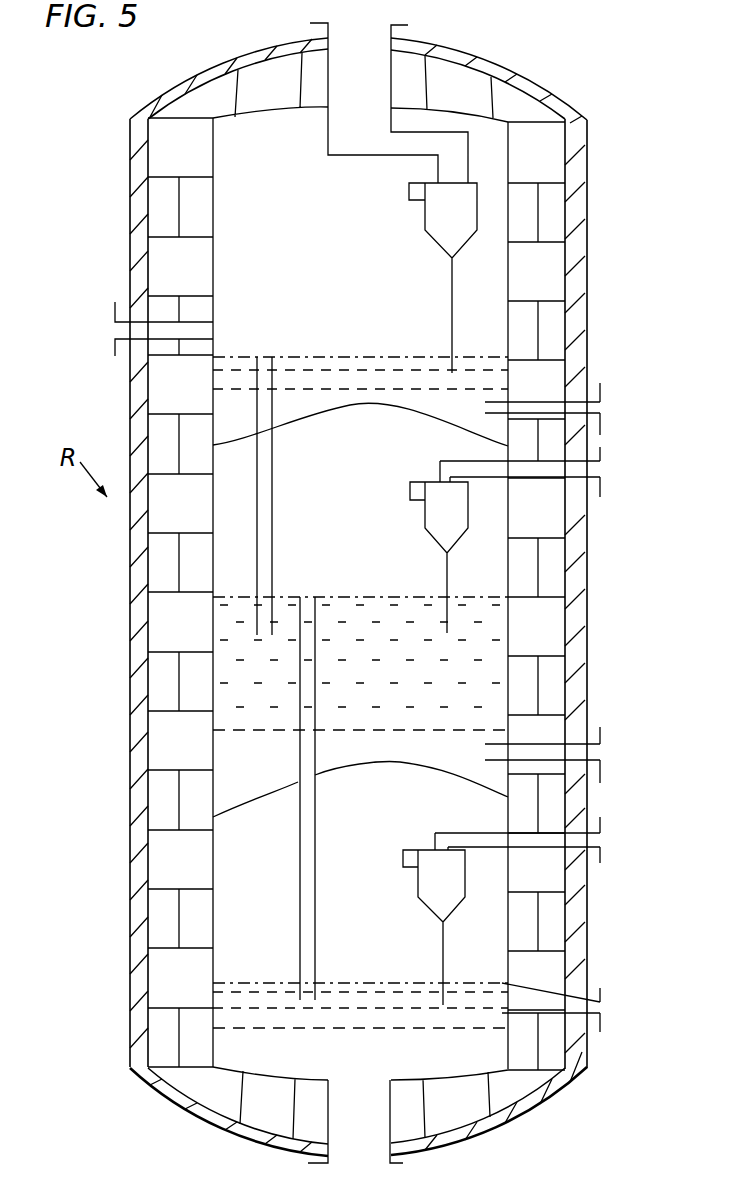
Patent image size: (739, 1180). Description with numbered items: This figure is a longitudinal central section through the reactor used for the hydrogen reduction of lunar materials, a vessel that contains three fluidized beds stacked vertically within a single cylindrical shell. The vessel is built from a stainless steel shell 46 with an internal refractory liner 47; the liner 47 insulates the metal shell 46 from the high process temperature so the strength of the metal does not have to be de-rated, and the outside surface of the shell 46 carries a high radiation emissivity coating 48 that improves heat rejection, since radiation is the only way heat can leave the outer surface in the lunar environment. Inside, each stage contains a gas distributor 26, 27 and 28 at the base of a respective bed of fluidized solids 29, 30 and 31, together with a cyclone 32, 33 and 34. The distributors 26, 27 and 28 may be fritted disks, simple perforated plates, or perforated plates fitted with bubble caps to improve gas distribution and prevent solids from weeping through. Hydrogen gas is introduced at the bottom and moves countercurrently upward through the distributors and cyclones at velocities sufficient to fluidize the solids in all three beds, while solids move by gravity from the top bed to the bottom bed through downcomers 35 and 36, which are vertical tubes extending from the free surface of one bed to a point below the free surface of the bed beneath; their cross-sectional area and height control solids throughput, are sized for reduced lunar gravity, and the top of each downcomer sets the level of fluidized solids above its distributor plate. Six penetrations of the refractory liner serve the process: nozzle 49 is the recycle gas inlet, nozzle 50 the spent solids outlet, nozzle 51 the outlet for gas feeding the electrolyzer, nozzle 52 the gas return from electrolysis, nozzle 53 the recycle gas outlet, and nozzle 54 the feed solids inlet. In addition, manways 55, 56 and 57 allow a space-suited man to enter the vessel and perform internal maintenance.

The gas distributor 26 is at (238, 392).
The gas distributor 27 is at (238, 733).
The gas distributor 28 is at (248, 1030).
The bed of fluidized solids 29 is at (360, 1005).
The bed of fluidized solids 30 is at (362, 627).
The bed of fluidized solids 31 is at (362, 362).
The cyclone 32 is at (455, 893).
The cyclone 33 is at (460, 524).
The cyclone 34 is at (465, 225).
The downcomer 35 is at (258, 498).
The downcomer 36 is at (302, 852).
The stainless steel shell 46 is at (112, 657).
The refractory liner 47 is at (158, 752).
The high radiation emissivity coating 48 is at (110, 787).
The nozzle 49 is at (388, 1132).
The nozzle 50 is at (601, 1018).
The nozzle 51 is at (601, 837).
The nozzle 52 is at (601, 737).
The nozzle 53 is at (601, 462).
The nozzle 54 is at (601, 400).
The manway 55 is at (328, 97).
The manway 56 is at (115, 341).
The manway 57 is at (353, 912).